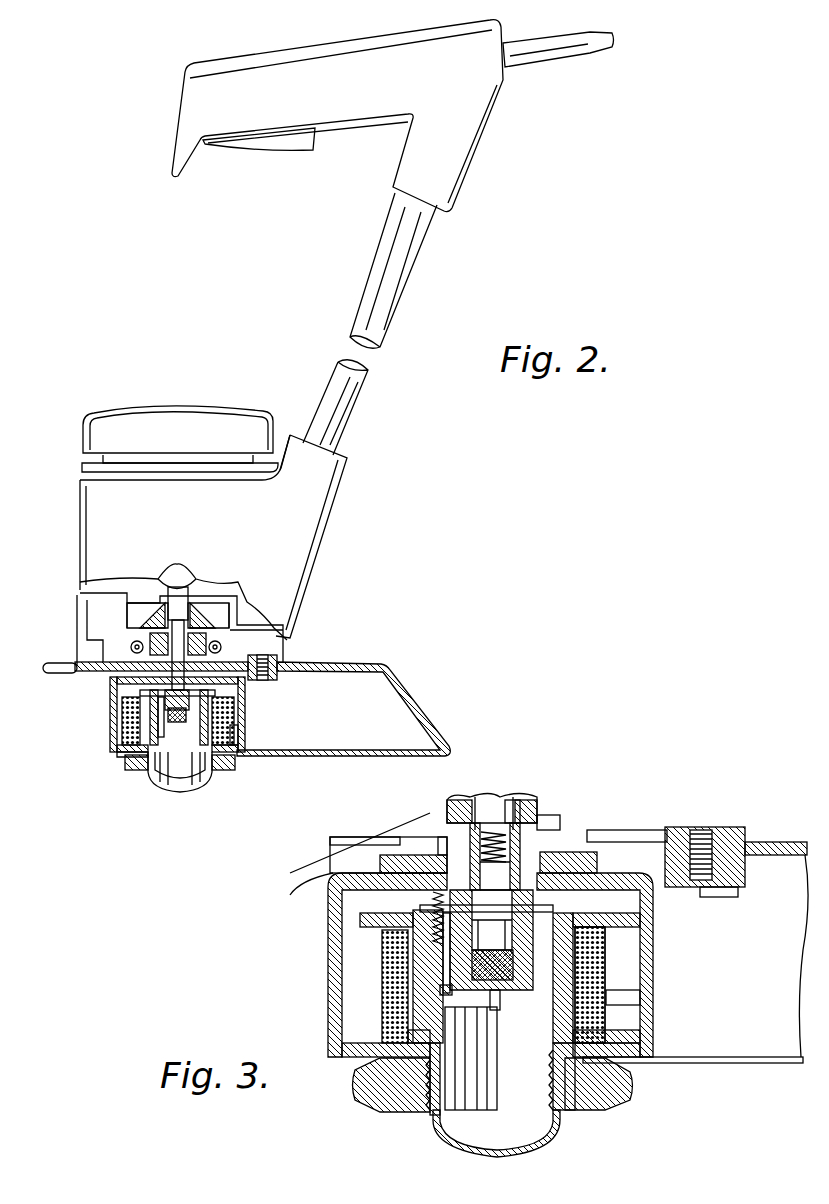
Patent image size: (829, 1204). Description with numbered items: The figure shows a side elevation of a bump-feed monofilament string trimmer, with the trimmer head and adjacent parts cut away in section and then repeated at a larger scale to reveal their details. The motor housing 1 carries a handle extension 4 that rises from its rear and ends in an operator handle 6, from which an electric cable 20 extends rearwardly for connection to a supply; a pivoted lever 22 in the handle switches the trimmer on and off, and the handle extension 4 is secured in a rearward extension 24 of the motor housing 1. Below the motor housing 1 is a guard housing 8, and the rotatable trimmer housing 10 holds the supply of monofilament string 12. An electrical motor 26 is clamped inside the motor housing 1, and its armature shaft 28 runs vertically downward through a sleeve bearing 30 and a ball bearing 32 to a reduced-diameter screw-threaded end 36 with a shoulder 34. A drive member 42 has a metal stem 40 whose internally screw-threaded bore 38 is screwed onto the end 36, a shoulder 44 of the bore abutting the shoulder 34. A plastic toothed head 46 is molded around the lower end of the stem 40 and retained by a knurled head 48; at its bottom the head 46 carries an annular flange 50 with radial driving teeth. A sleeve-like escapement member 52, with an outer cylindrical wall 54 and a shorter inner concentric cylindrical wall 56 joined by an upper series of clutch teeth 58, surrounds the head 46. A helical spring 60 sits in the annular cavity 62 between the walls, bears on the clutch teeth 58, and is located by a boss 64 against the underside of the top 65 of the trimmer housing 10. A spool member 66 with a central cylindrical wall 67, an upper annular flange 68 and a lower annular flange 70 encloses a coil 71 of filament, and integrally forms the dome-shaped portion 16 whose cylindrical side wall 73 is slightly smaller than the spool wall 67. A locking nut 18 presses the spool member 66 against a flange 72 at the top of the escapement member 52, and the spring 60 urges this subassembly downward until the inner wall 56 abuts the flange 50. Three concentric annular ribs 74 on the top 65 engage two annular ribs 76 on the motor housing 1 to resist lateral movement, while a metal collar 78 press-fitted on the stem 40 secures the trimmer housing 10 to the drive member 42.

In FIG. 2, the motor housing 1 is at (73, 600).
In FIG. 2, the handle extension 4 is at (348, 400).
In FIG. 2, the operator handle 6 is at (282, 50).
In FIG. 2, the guard housing 8 is at (362, 663).
In FIG. 3, the guard housing 8 is at (783, 840).
In FIG. 2, the trimmer housing 10 is at (247, 695).
In FIG. 3, the trimmer housing 10 is at (650, 958).
In FIG. 2, the monofilament string 12 is at (230, 740).
In FIG. 3, the monofilament string 12 is at (598, 980).
In FIG. 2, the dome-shaped portion 16 is at (200, 790).
In FIG. 3, the dome-shaped portion 16 is at (557, 1135).
In FIG. 2, the locking nut 18 is at (227, 765).
In FIG. 3, the locking nut 18 is at (602, 1085).
In FIG. 2, the electric cable 20 is at (563, 53).
In FIG. 2, the pivoted lever 22 is at (277, 142).
In FIG. 2, the rearward extension 24 is at (314, 563).
In FIG. 2, the electrical motor 26 is at (182, 572).
In FIG. 2, the armature shaft 28 is at (177, 602).
In FIG. 2, the sleeve bearing 30 is at (155, 617).
In FIG. 2, the ball bearing 32 is at (192, 637).
In FIG. 3, the shoulder 34 is at (490, 837).
In FIG. 3, the screw-threaded end 36 is at (485, 865).
In FIG. 3, the internally screw-threaded bore 38 is at (387, 866).
In FIG. 3, the metal stem 40 is at (442, 842).
In FIG. 3, the drive member 42 is at (437, 893).
In FIG. 3, the shoulder 44 is at (520, 807).
In FIG. 3, the plastic toothed head 46 is at (580, 953).
In FIG. 3, the knurled head 48 is at (497, 987).
In FIG. 2, the annular flange 50 is at (192, 733).
In FIG. 3, the annular flange 50 is at (533, 1000).
In FIG. 2, the escapement member 52 is at (152, 762).
In FIG. 3, the escapement member 52 is at (437, 1022).
In FIG. 3, the outer cylindrical wall 54 is at (423, 950).
In FIG. 2, the inner concentric cylindrical wall 56 is at (160, 712).
In FIG. 3, the inner concentric cylindrical wall 56 is at (450, 965).
In FIG. 3, the clutch teeth 58 is at (443, 987).
In FIG. 3, the helical spring 60 is at (547, 902).
In FIG. 3, the annular cavity 62 is at (423, 913).
In FIG. 3, the boss 64 is at (547, 908).
In FIG. 2, the top 65 is at (270, 662).
In FIG. 3, the top 65 is at (650, 890).
In FIG. 2, the spool member 66 is at (120, 760).
In FIG. 3, the spool member 66 is at (353, 1063).
In FIG. 2, the central cylindrical wall 67 is at (217, 718).
In FIG. 3, the central cylindrical wall 67 is at (600, 1032).
In FIG. 3, the upper annular flange 68 is at (633, 923).
In FIG. 3, the lower annular flange 70 is at (628, 1048).
In FIG. 2, the coil 71 is at (237, 738).
In FIG. 3, the coil 71 is at (628, 997).
In FIG. 3, the flange 72 is at (450, 905).
In FIG. 2, the cylindrical side wall 73 is at (155, 737).
In FIG. 3, the cylindrical side wall 73 is at (435, 1112).
In FIG. 2, the concentric annular ribs 74 is at (107, 673).
In FIG. 3, the concentric annular ribs 74 is at (393, 837).
In FIG. 3, the annular ribs 76 is at (400, 838).
In FIG. 3, the metal collar 78 is at (553, 823).